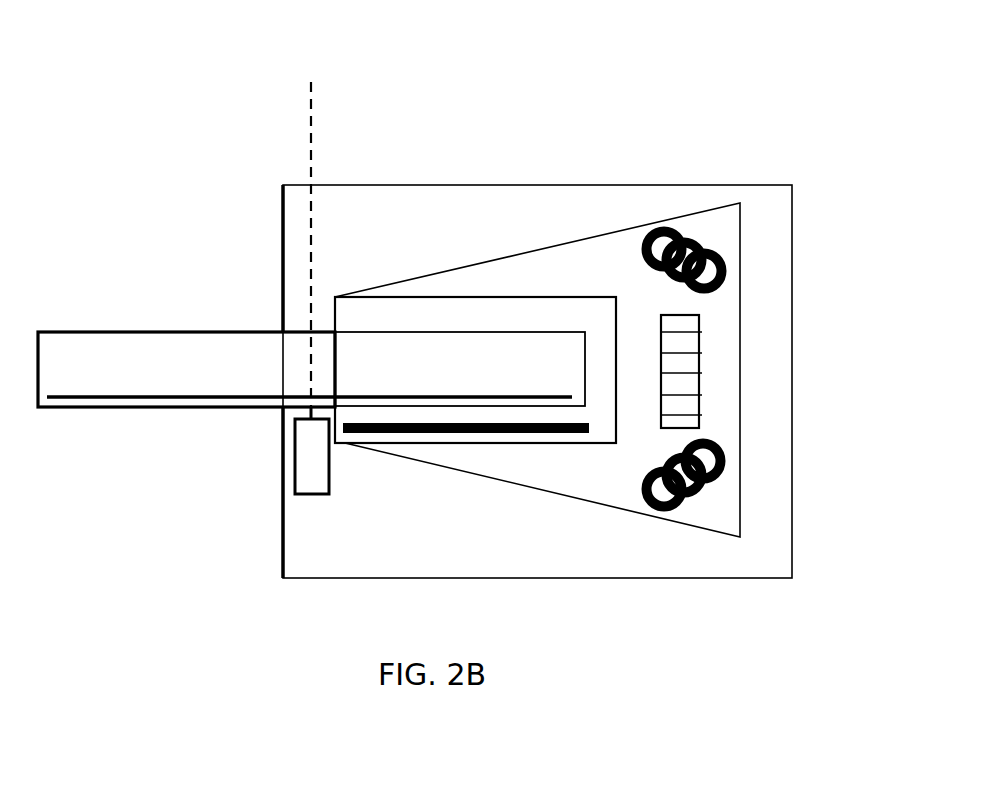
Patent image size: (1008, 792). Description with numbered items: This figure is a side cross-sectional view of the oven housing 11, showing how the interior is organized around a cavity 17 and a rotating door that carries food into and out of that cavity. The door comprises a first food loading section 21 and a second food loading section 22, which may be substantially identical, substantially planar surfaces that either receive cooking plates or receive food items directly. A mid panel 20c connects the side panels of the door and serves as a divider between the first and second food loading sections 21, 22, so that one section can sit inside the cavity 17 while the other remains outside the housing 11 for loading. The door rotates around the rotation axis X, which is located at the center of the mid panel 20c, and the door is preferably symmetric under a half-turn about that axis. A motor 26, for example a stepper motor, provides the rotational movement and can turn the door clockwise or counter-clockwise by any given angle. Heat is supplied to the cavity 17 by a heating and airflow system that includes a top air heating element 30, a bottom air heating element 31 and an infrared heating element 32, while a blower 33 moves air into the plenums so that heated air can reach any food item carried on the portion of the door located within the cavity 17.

The housing 11 is at (529, 187).
The cavity 17 is at (572, 315).
The mid panel 20c is at (335, 370).
The first food loading section 21 is at (166, 396).
The second food loading section 22 is at (441, 383).
The motor 26 is at (305, 469).
The top air heating element 30 is at (715, 247).
The bottom air heating element 31 is at (727, 462).
The infrared heating element 32 is at (497, 419).
The blower 33 is at (702, 355).
The rotation axis X is at (315, 95).